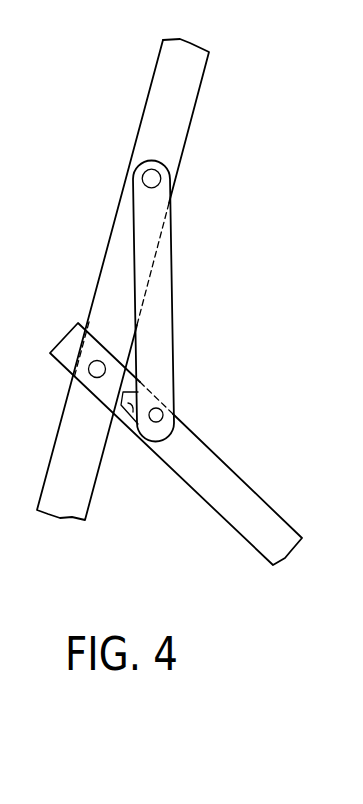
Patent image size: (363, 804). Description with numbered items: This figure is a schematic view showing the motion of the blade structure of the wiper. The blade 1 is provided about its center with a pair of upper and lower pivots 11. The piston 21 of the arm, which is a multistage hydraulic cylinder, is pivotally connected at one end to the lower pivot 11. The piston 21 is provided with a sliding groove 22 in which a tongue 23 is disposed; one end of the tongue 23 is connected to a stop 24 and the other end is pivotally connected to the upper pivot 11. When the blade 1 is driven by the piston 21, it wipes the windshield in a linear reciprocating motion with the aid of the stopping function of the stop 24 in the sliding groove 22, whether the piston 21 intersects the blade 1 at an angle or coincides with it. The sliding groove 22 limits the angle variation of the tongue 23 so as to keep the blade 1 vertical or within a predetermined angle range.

The blade 1 is at (186, 126).
The pivots 11 is at (145, 170).
The piston 21 is at (228, 480).
The sliding groove 22 is at (130, 421).
The tongue 23 is at (171, 305).
The stop 24 is at (173, 417).